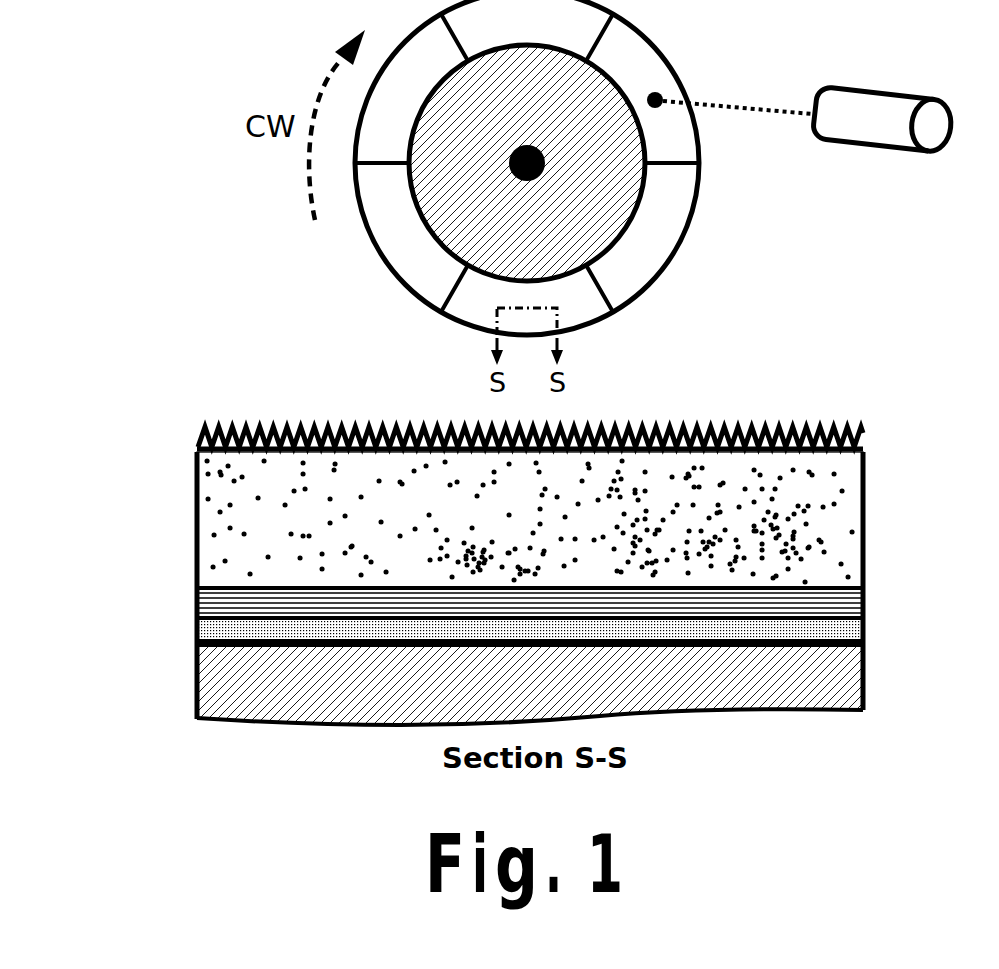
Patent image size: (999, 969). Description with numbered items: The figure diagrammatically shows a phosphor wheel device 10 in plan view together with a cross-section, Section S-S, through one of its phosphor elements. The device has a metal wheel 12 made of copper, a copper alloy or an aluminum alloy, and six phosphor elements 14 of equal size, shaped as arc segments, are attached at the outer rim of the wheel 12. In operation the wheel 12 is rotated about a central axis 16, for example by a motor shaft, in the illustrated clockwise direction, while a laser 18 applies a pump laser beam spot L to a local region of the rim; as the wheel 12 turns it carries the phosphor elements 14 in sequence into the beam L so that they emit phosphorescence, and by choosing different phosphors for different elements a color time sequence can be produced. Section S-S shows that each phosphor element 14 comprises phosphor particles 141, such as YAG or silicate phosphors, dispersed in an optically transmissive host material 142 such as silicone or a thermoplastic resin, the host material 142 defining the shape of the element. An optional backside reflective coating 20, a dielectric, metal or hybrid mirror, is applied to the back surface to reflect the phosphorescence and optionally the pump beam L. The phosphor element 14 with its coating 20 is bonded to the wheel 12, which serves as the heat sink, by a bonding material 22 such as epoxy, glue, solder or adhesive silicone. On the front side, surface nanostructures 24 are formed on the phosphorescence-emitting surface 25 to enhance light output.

The phosphor wheel device 10 is at (730, 232).
The metal wheel 12 is at (548, 239).
The phosphor element 14 is at (548, 35).
The phosphor particles 141 is at (230, 528).
The host material 142 is at (825, 540).
The central axis 16 is at (533, 171).
The laser 18 is at (878, 108).
The backside reflective coating 20 is at (863, 602).
The bonding material 22 is at (212, 630).
The surface nanostructures 24 is at (862, 433).
The phosphorescence-emitting surface 25 is at (201, 448).
The pump laser beam spot L is at (660, 94).